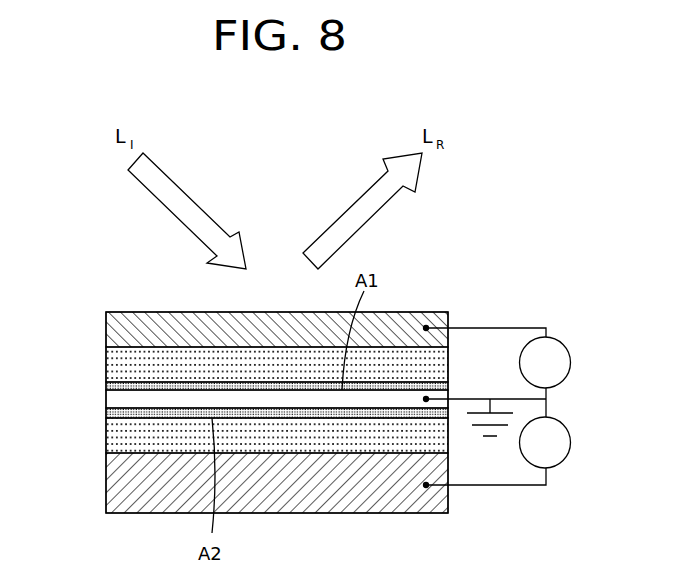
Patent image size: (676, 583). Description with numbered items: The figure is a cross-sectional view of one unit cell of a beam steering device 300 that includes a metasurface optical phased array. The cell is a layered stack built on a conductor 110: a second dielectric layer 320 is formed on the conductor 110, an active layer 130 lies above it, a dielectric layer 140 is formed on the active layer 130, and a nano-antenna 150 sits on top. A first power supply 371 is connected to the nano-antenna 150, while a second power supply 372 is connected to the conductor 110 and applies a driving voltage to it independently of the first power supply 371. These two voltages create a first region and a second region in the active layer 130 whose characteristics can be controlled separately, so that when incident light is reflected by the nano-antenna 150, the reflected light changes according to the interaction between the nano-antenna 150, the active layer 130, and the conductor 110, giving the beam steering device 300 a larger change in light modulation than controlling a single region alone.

The beam steering device 300 is at (492, 273).
The nano-antenna 150 is at (117, 321).
The dielectric layer 140 is at (117, 360).
The active layer 130 is at (117, 400).
The second dielectric layer 320 is at (117, 437).
The conductor 110 is at (117, 483).
The first power supply 371 is at (563, 342).
The second power supply 372 is at (563, 422).